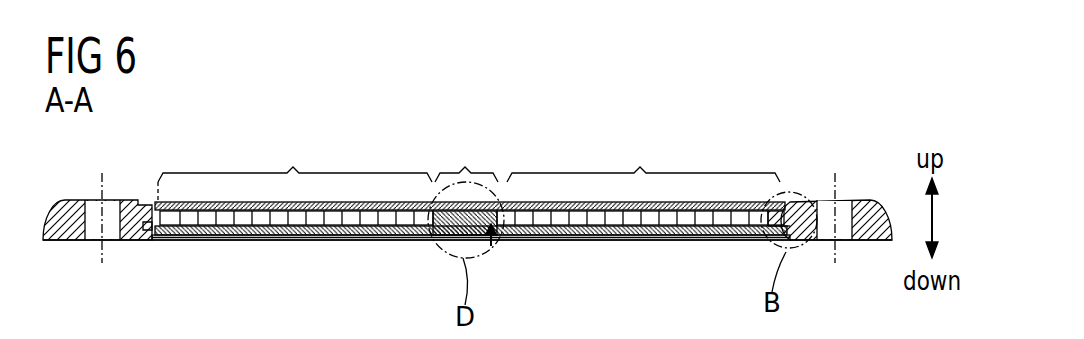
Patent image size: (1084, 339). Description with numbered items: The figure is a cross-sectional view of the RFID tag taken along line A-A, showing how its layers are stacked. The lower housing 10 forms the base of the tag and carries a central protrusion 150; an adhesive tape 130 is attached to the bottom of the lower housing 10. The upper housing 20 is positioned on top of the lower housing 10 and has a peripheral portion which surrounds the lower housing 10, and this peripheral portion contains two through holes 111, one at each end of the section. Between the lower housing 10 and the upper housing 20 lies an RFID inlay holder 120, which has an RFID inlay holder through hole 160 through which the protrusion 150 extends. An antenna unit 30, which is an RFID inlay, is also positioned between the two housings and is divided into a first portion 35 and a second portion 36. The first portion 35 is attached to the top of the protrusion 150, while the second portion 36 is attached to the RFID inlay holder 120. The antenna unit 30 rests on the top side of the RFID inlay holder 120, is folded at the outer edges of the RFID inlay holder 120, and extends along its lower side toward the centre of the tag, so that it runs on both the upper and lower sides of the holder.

The lower housing 10 is at (180, 238).
The upper housing 20 is at (873, 225).
The antenna unit 30 is at (718, 228).
The first portion 35 is at (466, 198).
The second portion 36 is at (470, 174).
The through holes 111 is at (93, 205).
The RFID inlay holder 120 is at (610, 236).
The adhesive tape 130 is at (318, 236).
The protrusion 150 is at (455, 244).
The RFID inlay holder through hole 160 is at (494, 246).